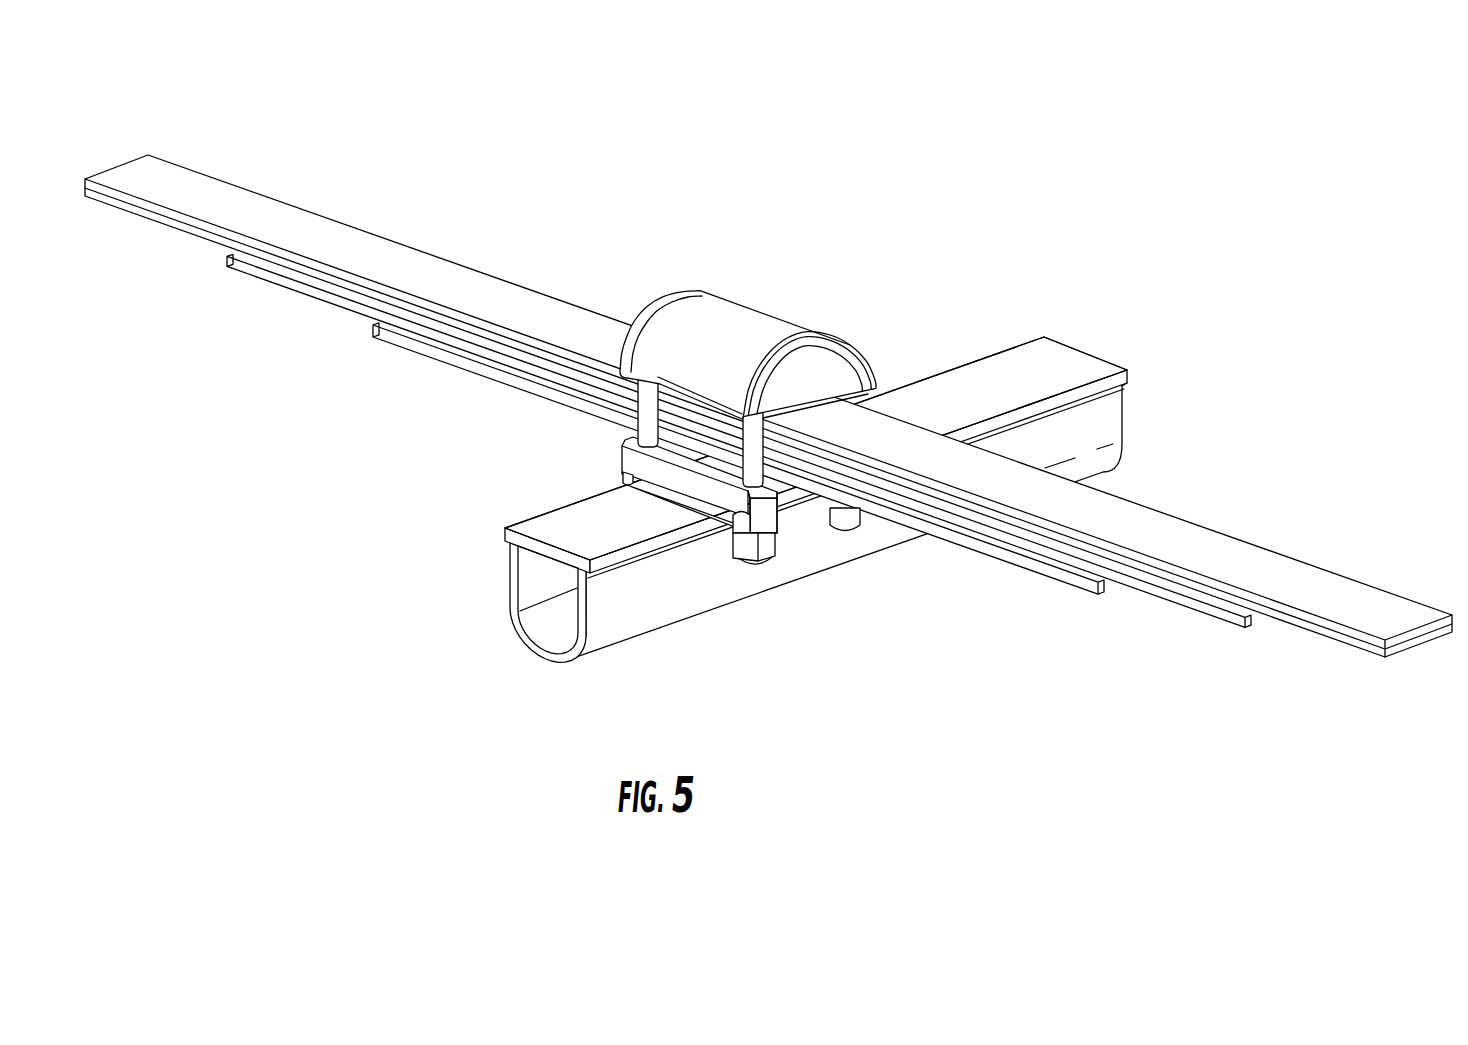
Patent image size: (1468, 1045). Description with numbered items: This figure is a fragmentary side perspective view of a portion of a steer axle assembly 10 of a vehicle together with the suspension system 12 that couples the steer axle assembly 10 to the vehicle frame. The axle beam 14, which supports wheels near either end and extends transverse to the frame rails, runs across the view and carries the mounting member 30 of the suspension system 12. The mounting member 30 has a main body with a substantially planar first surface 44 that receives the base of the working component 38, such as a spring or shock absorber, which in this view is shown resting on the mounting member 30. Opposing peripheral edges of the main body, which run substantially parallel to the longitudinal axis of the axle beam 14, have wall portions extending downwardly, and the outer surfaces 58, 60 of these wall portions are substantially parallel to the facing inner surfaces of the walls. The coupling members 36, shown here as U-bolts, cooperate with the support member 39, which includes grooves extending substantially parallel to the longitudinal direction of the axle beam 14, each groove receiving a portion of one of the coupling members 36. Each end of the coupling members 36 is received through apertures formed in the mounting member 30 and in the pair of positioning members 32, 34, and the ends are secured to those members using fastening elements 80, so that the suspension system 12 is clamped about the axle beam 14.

The steer axle assembly 10 is at (768, 384).
The suspension system 12 is at (722, 363).
The axle beam 14 is at (612, 630).
The mounting member 30 is at (623, 442).
The positioning member 32 is at (590, 503).
The positioning member 34 is at (740, 523).
The coupling member 36 is at (793, 343).
The working component 38 is at (443, 277).
The support member 39 is at (743, 323).
The first surface 44 is at (860, 409).
The outer surface 58 is at (620, 469).
The outer surface 60 is at (798, 510).
The fastening element 80 is at (770, 547).